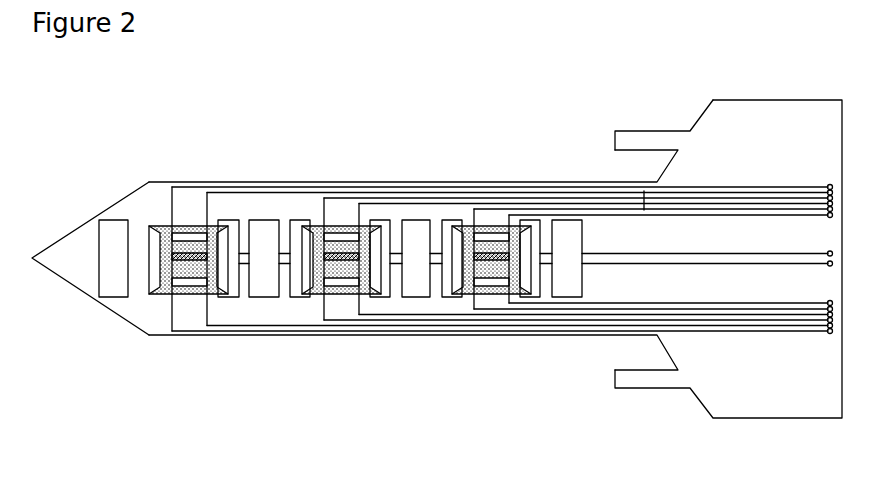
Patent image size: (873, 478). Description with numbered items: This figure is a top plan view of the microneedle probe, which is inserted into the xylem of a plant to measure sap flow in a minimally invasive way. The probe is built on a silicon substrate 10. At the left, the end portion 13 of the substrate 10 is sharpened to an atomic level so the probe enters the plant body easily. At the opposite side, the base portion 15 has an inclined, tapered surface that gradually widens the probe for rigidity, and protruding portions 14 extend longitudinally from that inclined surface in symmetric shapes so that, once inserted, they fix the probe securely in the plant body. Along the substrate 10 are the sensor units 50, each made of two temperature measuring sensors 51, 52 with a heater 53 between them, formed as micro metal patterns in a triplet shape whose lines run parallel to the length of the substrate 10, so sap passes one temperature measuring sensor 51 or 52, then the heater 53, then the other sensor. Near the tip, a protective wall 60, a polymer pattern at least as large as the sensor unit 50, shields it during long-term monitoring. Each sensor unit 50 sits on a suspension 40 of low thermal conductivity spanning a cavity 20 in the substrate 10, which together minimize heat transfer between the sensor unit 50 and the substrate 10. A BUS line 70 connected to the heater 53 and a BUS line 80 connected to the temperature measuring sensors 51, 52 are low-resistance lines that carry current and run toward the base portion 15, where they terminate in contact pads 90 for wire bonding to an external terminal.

The substrate 10 is at (157, 322).
The end portion 13 is at (35, 262).
The protruding portions 14 is at (644, 138).
The base portion 15 is at (781, 115).
The cavity 20 is at (227, 268).
The suspension 40 is at (191, 230).
The sensor unit 50 is at (350, 211).
The temperature measuring sensor 51 is at (332, 237).
The temperature measuring sensor 52 is at (348, 278).
The heater 53 is at (340, 254).
The protective wall 60 is at (119, 228).
The BUS line 70 is at (595, 252).
The BUS line 80 is at (690, 185).
The contact pads 90 is at (828, 335).